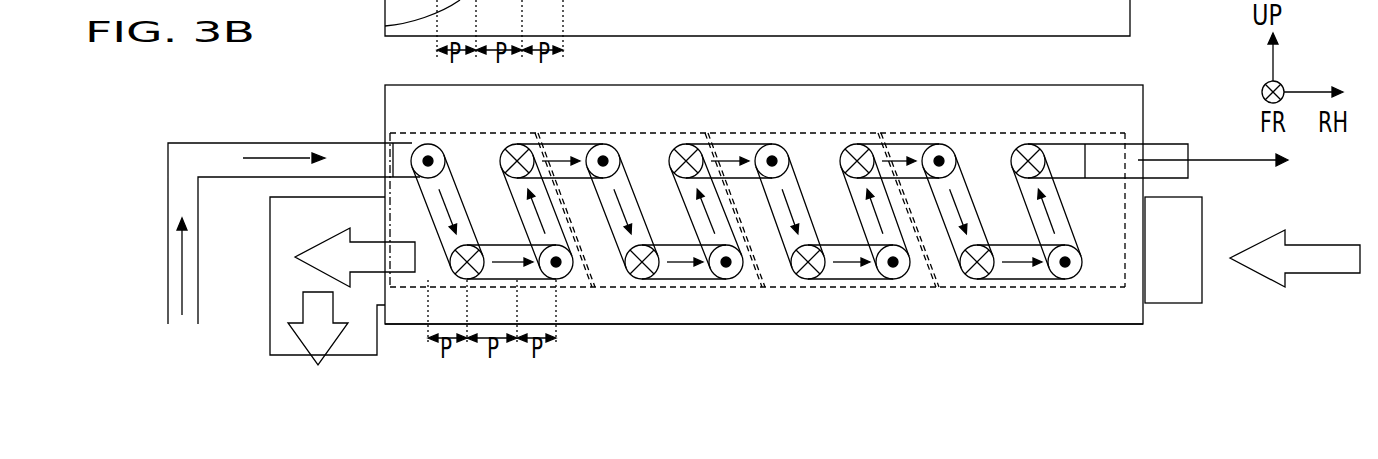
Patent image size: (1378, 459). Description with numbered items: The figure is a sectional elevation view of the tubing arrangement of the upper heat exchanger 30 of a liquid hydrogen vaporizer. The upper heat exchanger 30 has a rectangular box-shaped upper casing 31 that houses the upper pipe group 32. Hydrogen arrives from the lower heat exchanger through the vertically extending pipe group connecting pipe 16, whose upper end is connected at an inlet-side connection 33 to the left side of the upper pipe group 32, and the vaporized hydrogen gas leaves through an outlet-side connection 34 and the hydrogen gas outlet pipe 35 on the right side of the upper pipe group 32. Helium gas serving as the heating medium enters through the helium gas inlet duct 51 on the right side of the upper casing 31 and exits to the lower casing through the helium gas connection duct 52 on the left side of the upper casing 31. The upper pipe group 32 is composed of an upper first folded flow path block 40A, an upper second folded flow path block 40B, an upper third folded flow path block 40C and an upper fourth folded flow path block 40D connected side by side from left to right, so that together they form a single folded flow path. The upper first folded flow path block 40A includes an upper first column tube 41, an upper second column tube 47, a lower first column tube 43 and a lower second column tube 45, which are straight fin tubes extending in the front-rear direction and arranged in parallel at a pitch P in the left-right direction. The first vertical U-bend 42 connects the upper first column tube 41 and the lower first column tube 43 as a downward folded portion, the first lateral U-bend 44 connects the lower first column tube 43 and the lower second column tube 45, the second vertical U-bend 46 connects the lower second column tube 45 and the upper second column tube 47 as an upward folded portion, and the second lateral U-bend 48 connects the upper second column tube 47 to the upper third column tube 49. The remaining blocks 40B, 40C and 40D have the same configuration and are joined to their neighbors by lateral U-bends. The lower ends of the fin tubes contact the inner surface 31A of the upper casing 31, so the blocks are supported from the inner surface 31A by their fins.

The pipe group connecting pipe 16 is at (168, 233).
The upper heat exchanger 30 is at (200, 105).
The upper casing 31 is at (790, 325).
The inner surface of the upper casing 31A is at (895, 322).
The upper pipe group 32 is at (771, 6).
The inlet 33 is at (412, 142).
The outlet 34 is at (1060, 143).
The hydrogen gas outlet pipe 35 is at (1170, 143).
The upper first folded flow path block 40A is at (447, 132).
The upper second folded flow path block 40B is at (666, 132).
The upper third folded flow path block 40C is at (801, 132).
The upper fourth folded flow path block 40D is at (981, 132).
The upper first column tube 41 is at (432, 146).
The first vertical U-bend 42 is at (418, 224).
The lower first column tube 43 is at (460, 280).
The first lateral U-bend 44 is at (527, 282).
The lower second column tube 45 is at (565, 282).
The second vertical U-bend 46 is at (510, 217).
The upper second column tube 47 is at (518, 145).
The second lateral U-bend 48 is at (567, 145).
The upper third column tube 49 is at (607, 145).
The helium gas inlet duct 51 is at (1182, 305).
The helium gas connection duct 52 is at (270, 278).